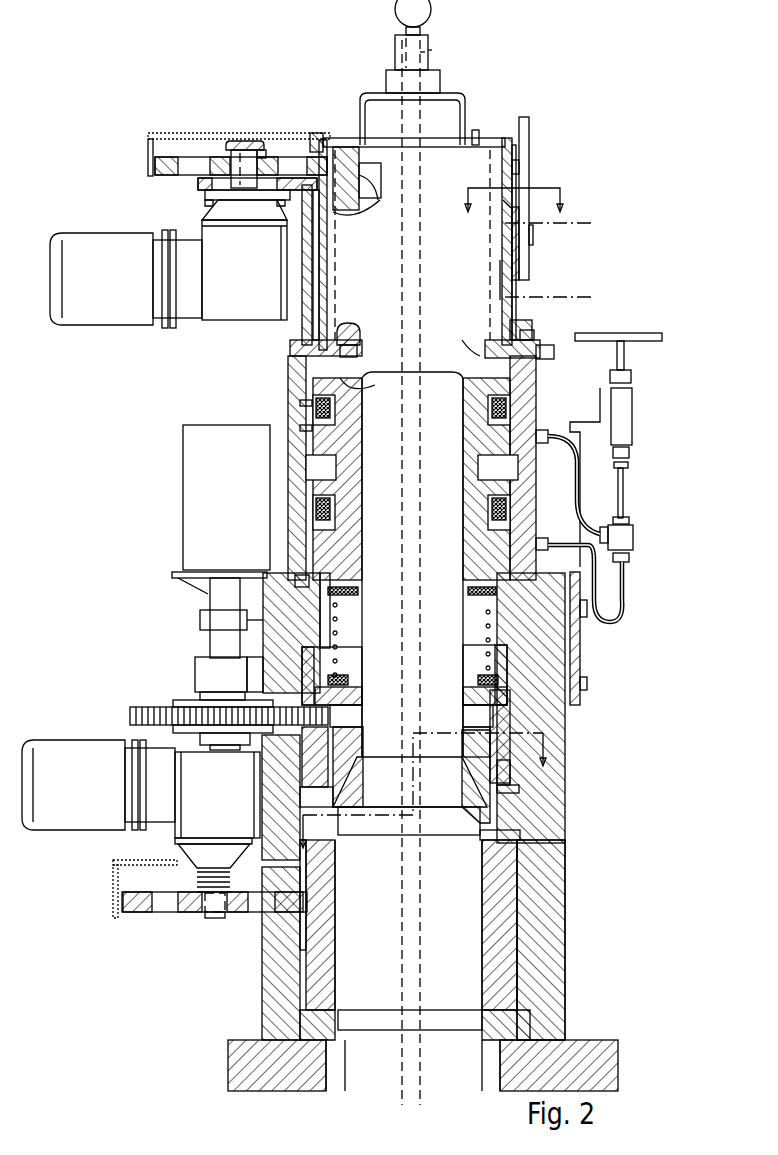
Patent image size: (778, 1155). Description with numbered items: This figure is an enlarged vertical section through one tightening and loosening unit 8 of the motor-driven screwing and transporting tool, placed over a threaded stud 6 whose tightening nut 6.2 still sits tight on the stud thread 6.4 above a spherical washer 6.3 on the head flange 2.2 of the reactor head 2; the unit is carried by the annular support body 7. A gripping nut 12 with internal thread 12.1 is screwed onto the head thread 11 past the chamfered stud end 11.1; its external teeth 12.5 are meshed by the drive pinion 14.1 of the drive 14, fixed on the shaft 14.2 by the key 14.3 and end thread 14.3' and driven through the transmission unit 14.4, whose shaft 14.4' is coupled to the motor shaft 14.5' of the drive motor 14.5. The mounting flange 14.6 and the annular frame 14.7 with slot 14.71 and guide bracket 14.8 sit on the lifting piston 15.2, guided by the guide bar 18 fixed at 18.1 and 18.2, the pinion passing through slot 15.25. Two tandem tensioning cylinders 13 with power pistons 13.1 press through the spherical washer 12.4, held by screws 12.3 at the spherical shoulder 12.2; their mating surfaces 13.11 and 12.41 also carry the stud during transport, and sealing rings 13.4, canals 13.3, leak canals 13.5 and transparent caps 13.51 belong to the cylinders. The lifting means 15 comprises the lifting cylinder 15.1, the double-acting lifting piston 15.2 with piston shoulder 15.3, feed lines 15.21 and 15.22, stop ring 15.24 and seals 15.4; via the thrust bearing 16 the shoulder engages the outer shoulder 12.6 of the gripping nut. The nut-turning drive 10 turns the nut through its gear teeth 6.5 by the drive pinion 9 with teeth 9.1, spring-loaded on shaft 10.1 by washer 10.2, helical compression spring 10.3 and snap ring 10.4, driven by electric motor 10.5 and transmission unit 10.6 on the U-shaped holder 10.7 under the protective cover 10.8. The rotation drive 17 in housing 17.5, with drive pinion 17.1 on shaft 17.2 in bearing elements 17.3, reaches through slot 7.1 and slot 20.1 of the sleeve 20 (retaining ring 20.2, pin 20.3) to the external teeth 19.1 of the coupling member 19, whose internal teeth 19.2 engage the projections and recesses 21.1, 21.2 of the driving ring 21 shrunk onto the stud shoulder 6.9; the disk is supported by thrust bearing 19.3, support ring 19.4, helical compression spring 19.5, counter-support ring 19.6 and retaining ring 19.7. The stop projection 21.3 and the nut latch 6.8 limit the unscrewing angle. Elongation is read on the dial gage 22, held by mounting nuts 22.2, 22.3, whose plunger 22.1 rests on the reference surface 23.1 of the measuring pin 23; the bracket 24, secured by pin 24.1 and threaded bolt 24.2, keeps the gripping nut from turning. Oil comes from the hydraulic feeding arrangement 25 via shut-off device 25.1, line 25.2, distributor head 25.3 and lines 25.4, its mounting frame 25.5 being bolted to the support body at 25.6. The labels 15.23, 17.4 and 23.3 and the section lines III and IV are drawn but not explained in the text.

The RPV head 2 is at (590, 1037).
The head flange 2.2 is at (238, 1072).
The threaded stud 6 is at (412, 567).
The tightening nut 6.2 is at (520, 840).
The spherical washer 6.3 is at (302, 1022).
The stud thread 6.4 is at (290, 927).
The external gear teeth 6.5 is at (520, 892).
The latch 6.8 is at (335, 860).
The stud shoulder 6.9 is at (364, 762).
The annular support body 7 is at (548, 922).
The tightening and loosening unit 8 is at (541, 940).
The slot in support body 7.1 is at (285, 700).
The drive pinion 9 is at (140, 914).
The gear teeth 9.1 is at (308, 902).
The nut-turning drive 10 is at (113, 894).
The shaft 10.1 is at (215, 918).
The washer 10.2 is at (185, 862).
The helical compression spring 10.3 is at (197, 880).
The snap ring 10.4 is at (200, 914).
The electric motor 10.5 is at (70, 750).
The transmission unit 10.6 is at (185, 757).
The U-shaped holder 10.7 is at (258, 814).
The protective sheet-metal cover 10.8 is at (113, 863).
The stud head thread 11 is at (328, 205).
The chamfered stud end 11.1 is at (375, 136).
The gripping nut 12 is at (504, 138).
The internal thread 12.1 is at (372, 192).
The spherically bevelled shoulder 12.2 is at (450, 347).
The screws 12.3 is at (352, 353).
The spherical washer 12.4 is at (472, 348).
The counter support surface 12.41 is at (400, 380).
The external teeth 12.5 is at (340, 243).
The outer shoulder 12.6 is at (525, 327).
The hydraulic tensioning cylinder 13 is at (537, 400).
The power piston 13.1 is at (478, 427).
The support surface 13.11 is at (412, 382).
The hydraulic canals 13.3 is at (530, 434).
The sealing rings 13.4 is at (515, 400).
The oil-leak monitoring canals 13.5 is at (288, 367).
The transparent caps 13.51 is at (298, 404).
The gripping-nut drive 14 is at (220, 307).
The drive pinion 14.1 is at (212, 160).
The shaft 14.2 is at (245, 175).
The key 14.3 is at (235, 131).
The end thread 14.3' is at (230, 124).
The transmission unit 14.4 is at (262, 331).
The transmission shaft 14.4' is at (221, 216).
The drive motor 14.5 is at (126, 264).
The motor shaft 14.5' is at (160, 292).
The mounting flange 14.6 is at (197, 184).
The annular support frame 14.7 is at (312, 135).
The slot 14.71 is at (262, 148).
The guide bracket 14.8 is at (519, 167).
The lifting means 15 is at (325, 140).
The lifting cylinder 15.1 is at (514, 248).
The lifting piston 15.2 is at (503, 273).
The hydraulic feed line 15.21 is at (574, 293).
The hydraulic feed line 15.22 is at (575, 224).
The edge 15.23 is at (503, 295).
The stop ring 15.24 is at (520, 210).
The slot 15.25 is at (307, 185).
The piston shoulder 15.3 is at (530, 354).
The sealing rings 15.4 is at (495, 215).
The thrust bearing 16 is at (538, 350).
The rotation drive 17 is at (208, 588).
The drive pinion 17.1 is at (152, 710).
The shaft 17.2 is at (218, 648).
The bearing elements 17.3 is at (198, 670).
The collar 17.4 is at (210, 623).
The drive housing 17.5 is at (205, 442).
The guide bar 18 is at (530, 126).
The guide bar attachment 18.1 is at (533, 232).
The guide bar attachment 18.2 is at (530, 273).
The coupling member 19 is at (350, 695).
The external teeth 19.1 is at (350, 714).
The internal teeth 19.2 is at (512, 742).
The thrust bearing 19.3 is at (340, 652).
The support ring 19.4 is at (350, 678).
The helical compression spring 19.5 is at (340, 625).
The counter-support ring 19.6 is at (358, 595).
The retaining ring 19.7 is at (345, 580).
The sleeve 20 is at (413, 716).
The slot in sleeve 20.1 is at (300, 774).
The retaining ring 20.2 is at (515, 797).
The pin 20.3 is at (520, 790).
The driving ring 21 is at (333, 762).
The coupling projections 21.1 is at (470, 767).
The coupling recesses 21.2 is at (470, 802).
The stop projection 21.3 is at (330, 797).
The dial gage 22 is at (431, 8).
The plunger 22.1 is at (432, 40).
The mounting nut 22.2 is at (392, 74).
The mounting nut 22.3 is at (395, 42).
The measuring pin 23 is at (422, 165).
The reference surface 23.1 is at (425, 52).
The rod section 23.3 is at (421, 264).
The bracket 24 is at (465, 100).
The pin 24.1 is at (476, 130).
The threaded bolt 24.2 is at (352, 160).
The high-pressure hydraulic feeding arrangement 25 is at (632, 450).
The shut-off device 25.1 is at (633, 408).
The line 25.2 is at (624, 490).
The distributor head 25.3 is at (633, 542).
The lines 25.4 is at (570, 497).
The mounting frame 25.5 is at (580, 700).
The bolting point 25.6 is at (587, 685).
The section III is at (514, 205).
The section IV is at (424, 792).